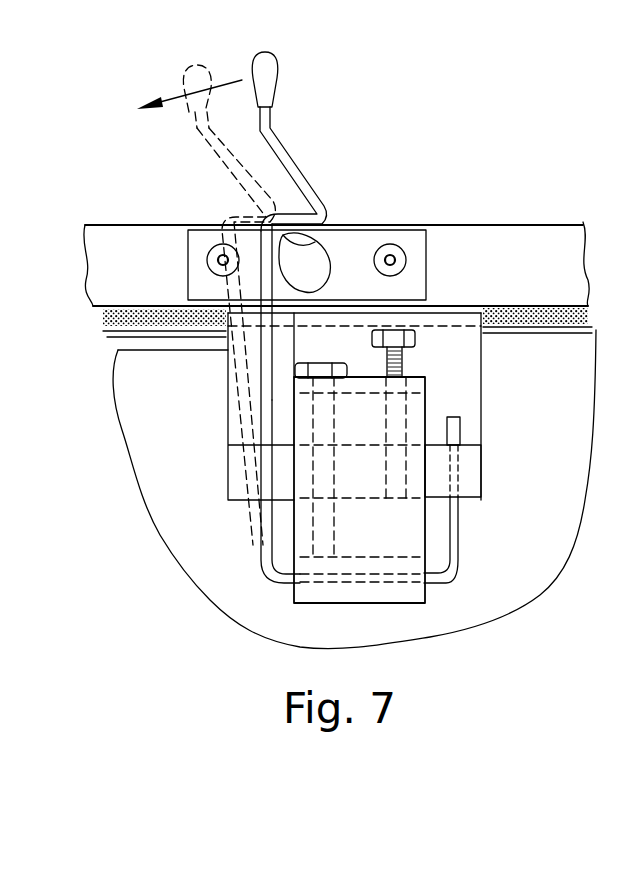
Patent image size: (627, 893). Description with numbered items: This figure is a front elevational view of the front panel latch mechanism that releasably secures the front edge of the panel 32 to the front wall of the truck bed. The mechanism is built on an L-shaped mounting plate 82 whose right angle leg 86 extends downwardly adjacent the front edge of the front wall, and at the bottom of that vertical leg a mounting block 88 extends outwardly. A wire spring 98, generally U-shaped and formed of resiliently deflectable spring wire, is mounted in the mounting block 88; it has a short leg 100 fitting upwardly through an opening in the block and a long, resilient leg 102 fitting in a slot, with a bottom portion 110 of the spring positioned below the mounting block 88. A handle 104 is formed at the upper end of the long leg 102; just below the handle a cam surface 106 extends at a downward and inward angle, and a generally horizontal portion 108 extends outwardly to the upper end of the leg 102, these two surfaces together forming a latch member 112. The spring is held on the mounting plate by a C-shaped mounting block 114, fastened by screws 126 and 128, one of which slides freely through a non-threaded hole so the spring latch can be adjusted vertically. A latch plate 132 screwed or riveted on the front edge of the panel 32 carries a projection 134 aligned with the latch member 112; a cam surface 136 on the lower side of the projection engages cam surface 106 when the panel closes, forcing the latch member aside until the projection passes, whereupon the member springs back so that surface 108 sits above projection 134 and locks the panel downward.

The panel 32 is at (505, 240).
The mounting plate 82 is at (492, 397).
The right angle leg 86 is at (462, 365).
The mounting block 88 is at (477, 472).
The wire spring 98 is at (290, 132).
The short leg 100 is at (455, 428).
The long, resilient leg 102 is at (262, 349).
The handle 104 is at (277, 64).
The cam surface 106 is at (309, 177).
The generally horizontal portion 108 is at (302, 240).
The bottom portion 110 is at (437, 583).
The latch member 112 is at (366, 184).
The C-shaped mounting block 114 is at (283, 541).
The screw 126 is at (418, 335).
The screw 128 is at (295, 372).
The latch plate 132 is at (449, 271).
The projection 134 is at (330, 256).
The cam surface 136 is at (300, 288).